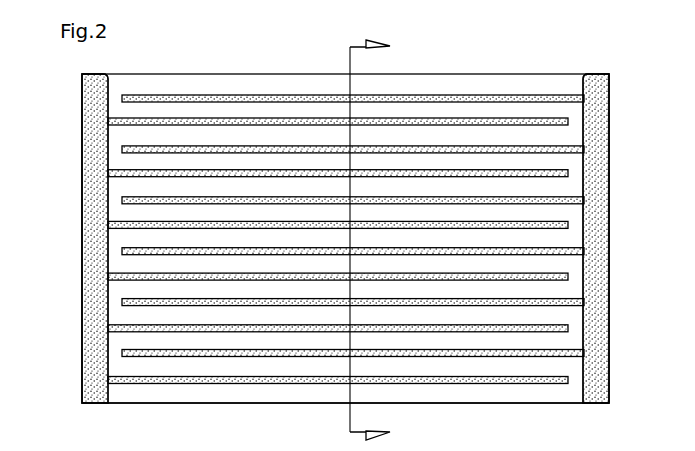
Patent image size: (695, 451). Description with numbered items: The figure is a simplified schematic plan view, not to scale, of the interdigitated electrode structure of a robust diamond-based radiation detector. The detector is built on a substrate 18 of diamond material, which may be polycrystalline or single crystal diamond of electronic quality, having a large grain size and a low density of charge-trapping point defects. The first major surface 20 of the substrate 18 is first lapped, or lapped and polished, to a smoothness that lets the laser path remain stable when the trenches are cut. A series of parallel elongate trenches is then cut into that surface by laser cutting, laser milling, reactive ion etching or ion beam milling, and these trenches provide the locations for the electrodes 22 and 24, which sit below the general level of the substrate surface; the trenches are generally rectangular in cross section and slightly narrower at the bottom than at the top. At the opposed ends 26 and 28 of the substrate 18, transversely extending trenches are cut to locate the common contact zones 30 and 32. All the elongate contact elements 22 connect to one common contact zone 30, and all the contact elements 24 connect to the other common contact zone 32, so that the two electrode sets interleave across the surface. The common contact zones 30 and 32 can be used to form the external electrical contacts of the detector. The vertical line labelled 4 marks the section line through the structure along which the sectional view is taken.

The section line 4- 4 is at (380, 240).
The substrate 18 is at (535, 403).
The first major surface 20 is at (462, 393).
The electrode 22 is at (205, 384).
The electrode 24 is at (283, 357).
The end of the substrate 26 is at (82, 272).
The end of the substrate 28 is at (610, 278).
The common contact zone 30 is at (93, 212).
The common contact zone 32 is at (598, 222).